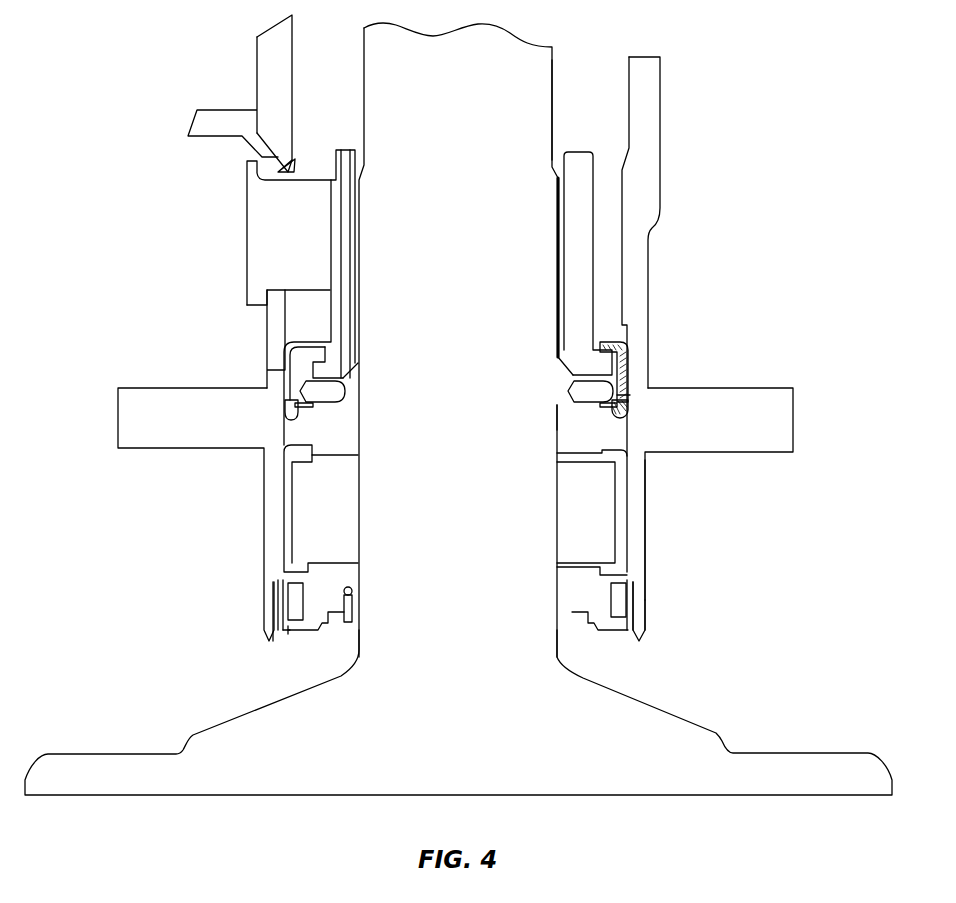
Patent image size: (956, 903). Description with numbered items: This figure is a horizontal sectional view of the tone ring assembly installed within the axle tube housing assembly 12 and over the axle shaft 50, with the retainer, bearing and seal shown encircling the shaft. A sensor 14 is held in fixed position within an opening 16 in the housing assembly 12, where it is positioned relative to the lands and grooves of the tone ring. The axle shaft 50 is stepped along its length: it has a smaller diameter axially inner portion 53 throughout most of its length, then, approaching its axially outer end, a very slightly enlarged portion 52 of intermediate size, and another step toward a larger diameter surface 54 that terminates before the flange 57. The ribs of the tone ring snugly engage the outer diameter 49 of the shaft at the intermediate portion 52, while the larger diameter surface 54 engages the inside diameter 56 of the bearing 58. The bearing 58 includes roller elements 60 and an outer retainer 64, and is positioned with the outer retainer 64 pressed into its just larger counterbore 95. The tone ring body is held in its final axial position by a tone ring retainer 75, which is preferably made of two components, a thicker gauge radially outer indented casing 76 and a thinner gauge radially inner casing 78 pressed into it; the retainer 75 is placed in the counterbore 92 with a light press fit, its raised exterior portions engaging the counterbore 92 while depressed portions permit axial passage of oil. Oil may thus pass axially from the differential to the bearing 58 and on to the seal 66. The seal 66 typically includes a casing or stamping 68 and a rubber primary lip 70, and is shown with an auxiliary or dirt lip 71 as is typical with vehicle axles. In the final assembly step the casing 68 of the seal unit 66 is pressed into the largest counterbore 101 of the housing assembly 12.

The axle tube housing assembly 12 is at (231, 543).
The sensor 14 is at (258, 205).
The opening 16 is at (290, 166).
The outer diameter 49 is at (556, 280).
The axle shaft 50 is at (362, 75).
The portion of intermediate size 52 is at (558, 225).
The axially inner portion 53 is at (553, 62).
The larger diameter surface 54 is at (358, 497).
The inside diameter 56 is at (556, 505).
The flange 57 is at (233, 717).
The bearing 58 is at (632, 484).
The roller elements 60 is at (567, 478).
The outer retainer 64 is at (632, 571).
The seal 66 is at (356, 604).
The casing 68 is at (290, 631).
The rubber primary lip 70 is at (353, 585).
The auxiliary or dirt lip 71 is at (353, 623).
The tone ring retainer 75 is at (642, 358).
The radially outer indented casing 76 is at (632, 391).
The radially inner casing 78 is at (612, 420).
The counterbore 92 is at (623, 327).
The counterbore 95 is at (290, 445).
The largest counterbore 101 is at (650, 623).